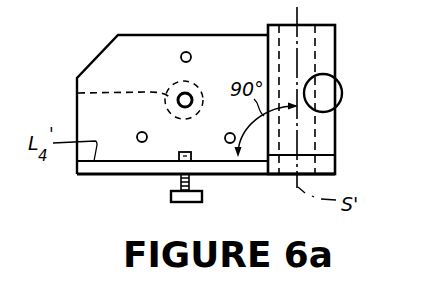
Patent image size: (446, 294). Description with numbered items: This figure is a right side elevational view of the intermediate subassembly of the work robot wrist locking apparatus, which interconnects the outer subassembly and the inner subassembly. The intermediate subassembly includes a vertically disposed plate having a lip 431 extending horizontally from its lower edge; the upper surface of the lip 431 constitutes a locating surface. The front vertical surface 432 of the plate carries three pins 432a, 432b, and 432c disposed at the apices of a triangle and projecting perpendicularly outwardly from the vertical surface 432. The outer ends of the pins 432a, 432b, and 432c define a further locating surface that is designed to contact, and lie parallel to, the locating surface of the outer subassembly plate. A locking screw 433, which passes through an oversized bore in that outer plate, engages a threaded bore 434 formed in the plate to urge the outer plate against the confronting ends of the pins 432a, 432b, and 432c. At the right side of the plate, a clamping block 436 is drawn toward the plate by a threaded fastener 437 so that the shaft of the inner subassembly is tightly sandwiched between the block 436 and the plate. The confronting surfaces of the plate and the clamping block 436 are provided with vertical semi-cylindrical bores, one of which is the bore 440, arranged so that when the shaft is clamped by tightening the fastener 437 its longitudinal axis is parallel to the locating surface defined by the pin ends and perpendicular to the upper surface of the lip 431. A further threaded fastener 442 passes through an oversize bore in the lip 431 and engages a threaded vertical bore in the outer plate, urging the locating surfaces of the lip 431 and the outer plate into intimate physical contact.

The lip 431 is at (137, 167).
The front vertical surface 432 is at (143, 68).
The pin 432a is at (188, 52).
The pin 432b is at (144, 132).
The pin 432c is at (227, 143).
The locking screw 433 is at (78, 97).
The threaded bore 434 is at (201, 88).
The clamping block 436 is at (326, 54).
The threaded fastener 437 is at (342, 91).
The vertical semi-cylindrical bore 440 is at (316, 48).
The threaded fastener 442 is at (184, 203).